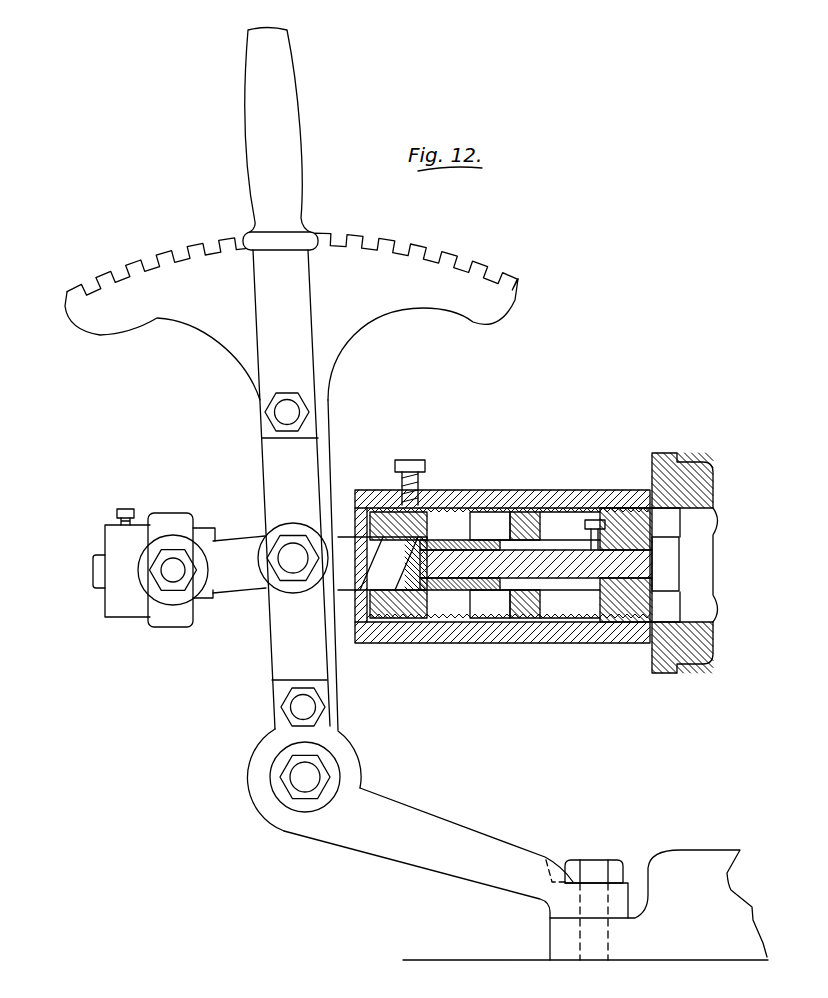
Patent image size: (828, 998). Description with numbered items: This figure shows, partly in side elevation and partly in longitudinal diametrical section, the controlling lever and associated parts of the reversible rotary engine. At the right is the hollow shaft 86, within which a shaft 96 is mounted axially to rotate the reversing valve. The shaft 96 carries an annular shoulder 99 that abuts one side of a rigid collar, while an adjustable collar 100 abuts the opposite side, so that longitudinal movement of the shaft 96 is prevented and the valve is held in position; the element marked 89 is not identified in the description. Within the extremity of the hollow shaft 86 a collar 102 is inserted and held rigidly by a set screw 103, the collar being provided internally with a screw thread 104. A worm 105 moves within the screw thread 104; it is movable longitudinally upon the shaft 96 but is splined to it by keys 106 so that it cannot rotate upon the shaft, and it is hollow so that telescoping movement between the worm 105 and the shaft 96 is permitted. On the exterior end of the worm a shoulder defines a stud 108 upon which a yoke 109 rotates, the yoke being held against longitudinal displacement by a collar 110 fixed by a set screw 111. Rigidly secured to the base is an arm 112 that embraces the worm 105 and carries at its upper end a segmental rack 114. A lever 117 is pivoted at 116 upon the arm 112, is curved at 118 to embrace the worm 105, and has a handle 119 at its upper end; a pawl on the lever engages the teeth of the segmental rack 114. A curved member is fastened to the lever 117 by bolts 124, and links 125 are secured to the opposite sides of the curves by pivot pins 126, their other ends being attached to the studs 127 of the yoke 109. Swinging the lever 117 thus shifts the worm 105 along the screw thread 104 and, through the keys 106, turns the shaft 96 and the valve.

The hollow shaft 86 is at (503, 490).
The gland nut 89 is at (630, 505).
The shaft 96 is at (702, 563).
The annular shoulder 99 is at (678, 540).
The adjustable collar 100 is at (602, 598).
The collar 102 is at (433, 490).
The set screw 103 is at (408, 460).
The screw thread 104 is at (458, 506).
The worm 105 is at (418, 577).
The keys 106 is at (478, 535).
The stud 108 is at (95, 588).
The yoke 109 is at (182, 617).
The collar 110 is at (112, 534).
The set screw 111 is at (133, 508).
The arm 112 is at (395, 857).
The segmental rack 114 is at (392, 258).
The pivot 116 is at (302, 768).
The lever 117 is at (290, 302).
The curved portion 118 is at (270, 482).
The handle 119 is at (290, 148).
The bolts 124 is at (287, 412).
The links 125 is at (250, 580).
The pivot pins 126 is at (293, 552).
The studs 127 is at (173, 570).